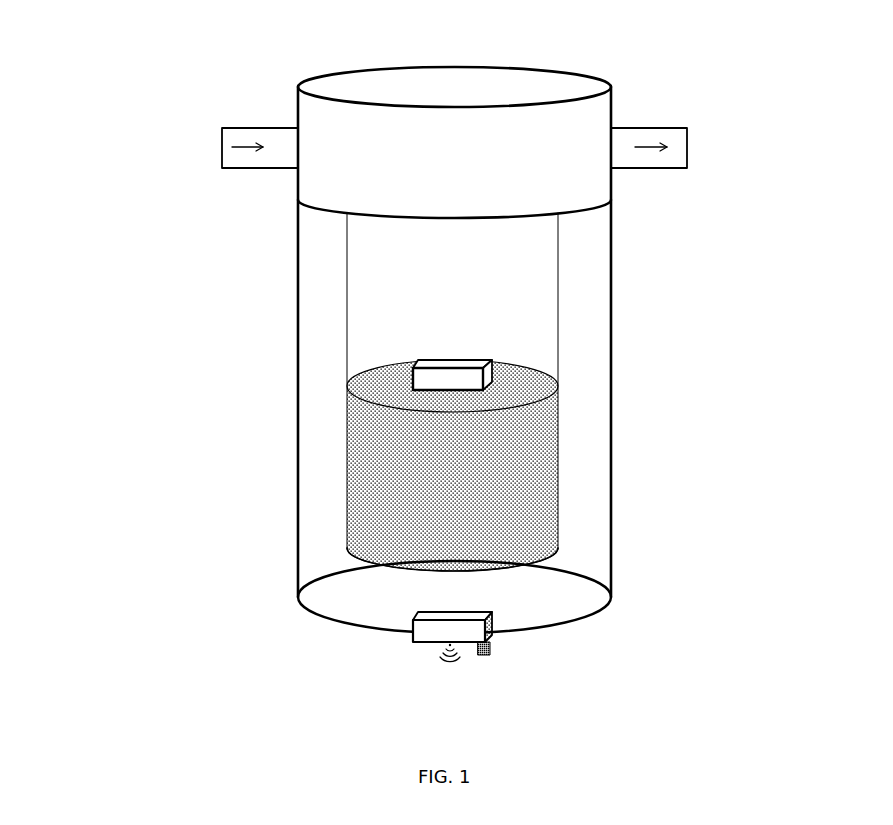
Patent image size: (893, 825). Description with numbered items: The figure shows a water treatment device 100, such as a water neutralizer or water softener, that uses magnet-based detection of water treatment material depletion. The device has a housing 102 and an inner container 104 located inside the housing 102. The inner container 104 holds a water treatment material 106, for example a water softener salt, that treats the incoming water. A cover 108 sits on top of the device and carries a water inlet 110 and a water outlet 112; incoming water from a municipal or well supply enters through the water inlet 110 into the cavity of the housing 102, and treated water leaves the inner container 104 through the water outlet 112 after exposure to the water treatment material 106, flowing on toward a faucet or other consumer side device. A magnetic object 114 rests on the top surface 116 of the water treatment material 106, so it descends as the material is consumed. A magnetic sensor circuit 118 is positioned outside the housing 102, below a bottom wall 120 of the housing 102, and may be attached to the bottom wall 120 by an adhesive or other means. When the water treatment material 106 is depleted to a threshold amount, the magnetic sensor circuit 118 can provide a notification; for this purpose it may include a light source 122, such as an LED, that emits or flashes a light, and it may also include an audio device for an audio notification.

The water treatment device 100 is at (162, 37).
The housing 102 is at (298, 250).
The inner container 104 is at (350, 318).
The water treatment material 106 is at (518, 450).
The cover 108 is at (600, 108).
The water inlet 110 is at (247, 165).
The water outlet 112 is at (672, 163).
The magnetic object 114 is at (425, 375).
The top surface 116 is at (543, 390).
The magnetic sensor circuit 118 is at (468, 627).
The bottom wall 120 is at (348, 602).
The light source 122 is at (485, 655).